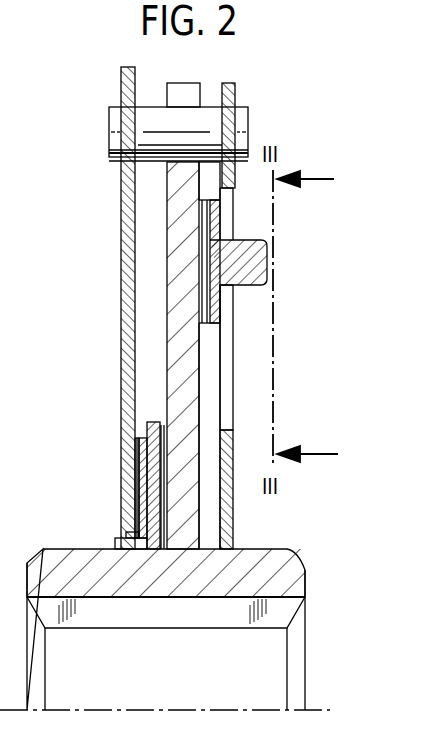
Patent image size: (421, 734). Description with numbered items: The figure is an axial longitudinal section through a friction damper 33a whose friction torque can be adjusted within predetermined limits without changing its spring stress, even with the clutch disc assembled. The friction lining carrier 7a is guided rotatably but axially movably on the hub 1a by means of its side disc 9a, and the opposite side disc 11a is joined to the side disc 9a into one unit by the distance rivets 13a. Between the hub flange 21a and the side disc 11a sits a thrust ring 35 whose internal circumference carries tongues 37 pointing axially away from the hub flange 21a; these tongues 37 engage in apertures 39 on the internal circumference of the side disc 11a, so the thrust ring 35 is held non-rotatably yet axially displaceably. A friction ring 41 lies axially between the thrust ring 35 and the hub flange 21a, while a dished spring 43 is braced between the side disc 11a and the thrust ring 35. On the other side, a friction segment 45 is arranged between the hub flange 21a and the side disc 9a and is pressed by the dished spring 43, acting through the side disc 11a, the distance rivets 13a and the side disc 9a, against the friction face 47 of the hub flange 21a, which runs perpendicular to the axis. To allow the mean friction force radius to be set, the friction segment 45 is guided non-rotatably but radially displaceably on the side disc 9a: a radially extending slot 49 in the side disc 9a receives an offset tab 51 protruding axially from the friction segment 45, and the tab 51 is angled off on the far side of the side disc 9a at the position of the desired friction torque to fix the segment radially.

The hub 1a is at (290, 556).
The friction lining carrier 7a is at (104, 88).
The side disc 9a is at (236, 96).
The side disc 11a is at (121, 182).
The distance rivets 13a is at (157, 113).
The hub flange 21a is at (173, 363).
The friction damper 33a is at (98, 393).
The thrust ring 35 is at (143, 452).
The tongues 37 is at (116, 543).
The apertures 39 is at (132, 536).
The friction ring 41 is at (148, 428).
The dished spring 43 is at (141, 474).
The friction segment 45 is at (210, 332).
The friction face 47 is at (200, 356).
The slot 49 is at (228, 385).
The offset tab 51 is at (267, 264).